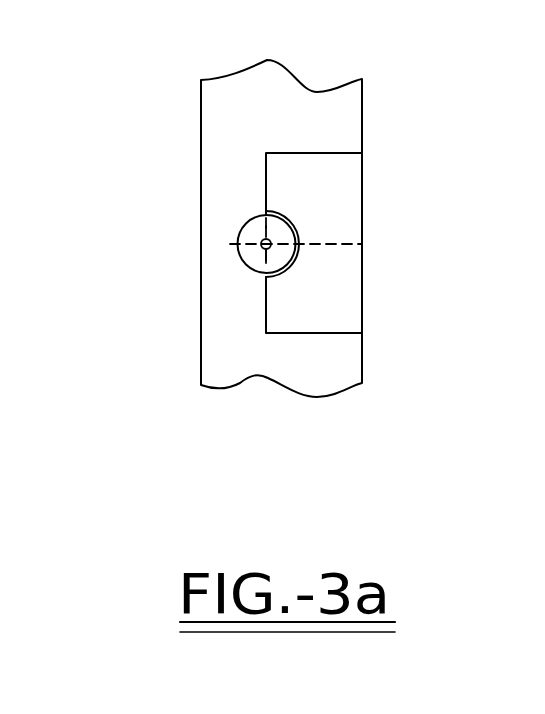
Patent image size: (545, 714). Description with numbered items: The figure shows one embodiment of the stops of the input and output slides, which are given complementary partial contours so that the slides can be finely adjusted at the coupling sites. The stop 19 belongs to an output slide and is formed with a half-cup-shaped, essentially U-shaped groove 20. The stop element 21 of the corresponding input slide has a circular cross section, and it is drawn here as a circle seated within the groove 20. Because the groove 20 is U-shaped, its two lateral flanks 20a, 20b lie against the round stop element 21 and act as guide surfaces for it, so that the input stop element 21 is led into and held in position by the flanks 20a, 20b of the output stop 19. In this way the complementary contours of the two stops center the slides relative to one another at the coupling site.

The stop 19 is at (347, 210).
The groove 20 is at (301, 252).
The lateral flank 20a is at (293, 266).
The lateral flank 20b is at (292, 222).
The stop element 21 is at (250, 232).